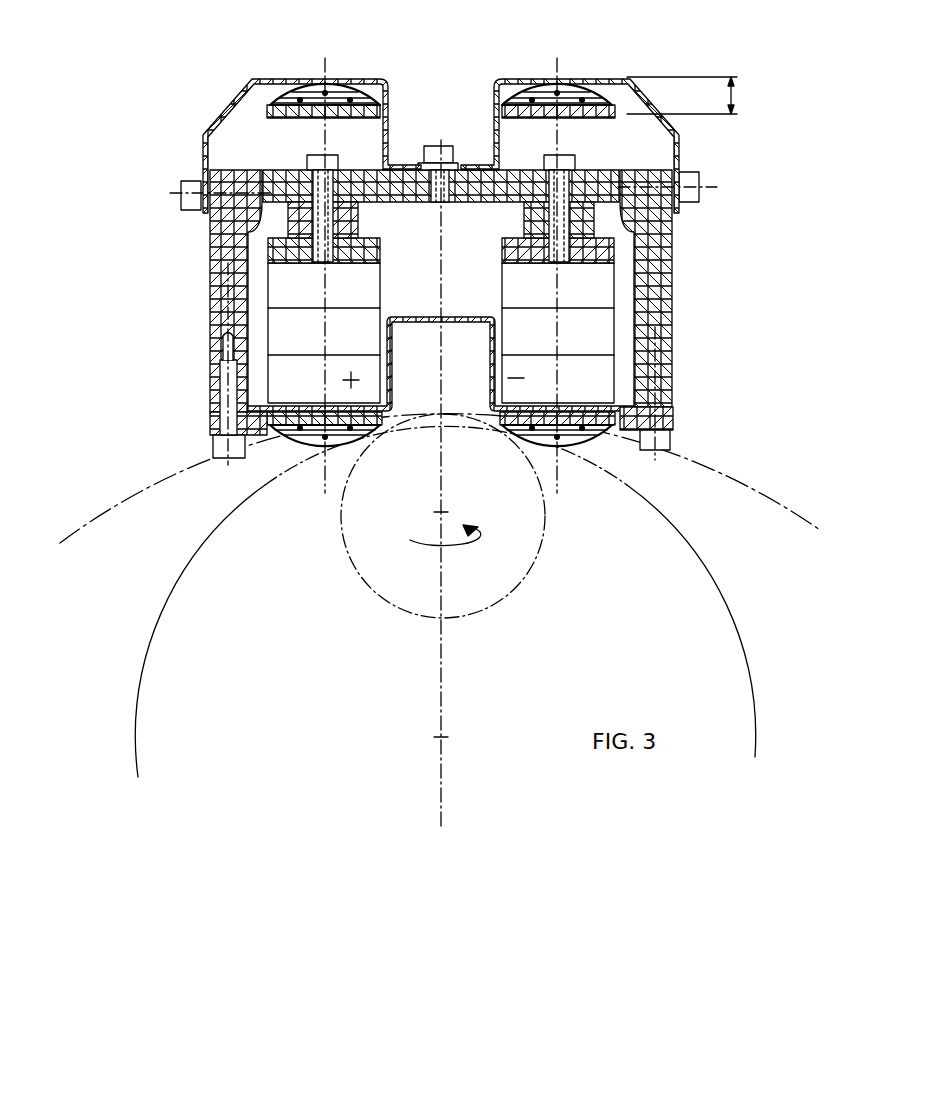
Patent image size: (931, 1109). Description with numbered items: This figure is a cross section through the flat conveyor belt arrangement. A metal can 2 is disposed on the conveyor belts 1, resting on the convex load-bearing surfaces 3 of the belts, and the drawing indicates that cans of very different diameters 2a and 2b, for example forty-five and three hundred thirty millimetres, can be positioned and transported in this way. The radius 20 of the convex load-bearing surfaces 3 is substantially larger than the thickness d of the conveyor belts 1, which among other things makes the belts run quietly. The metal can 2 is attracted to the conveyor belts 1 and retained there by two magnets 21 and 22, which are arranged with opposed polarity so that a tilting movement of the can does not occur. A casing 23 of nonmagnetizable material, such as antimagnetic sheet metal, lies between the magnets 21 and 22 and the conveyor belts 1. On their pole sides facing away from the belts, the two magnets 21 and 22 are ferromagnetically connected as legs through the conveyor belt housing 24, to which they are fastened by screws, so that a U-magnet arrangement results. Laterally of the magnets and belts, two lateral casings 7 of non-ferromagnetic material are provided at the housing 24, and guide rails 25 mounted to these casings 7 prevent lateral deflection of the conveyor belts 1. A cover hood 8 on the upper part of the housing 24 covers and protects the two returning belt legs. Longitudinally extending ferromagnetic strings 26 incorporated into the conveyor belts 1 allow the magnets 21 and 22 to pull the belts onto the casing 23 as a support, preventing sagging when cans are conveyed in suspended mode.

The conveyor belt 1 is at (277, 100).
The metal can 2 is at (140, 705).
The can diameter 2a is at (400, 610).
The can diameter 2b is at (147, 502).
The convex load-bearing surface 3 is at (370, 94).
The lateral casing 7 is at (231, 288).
The cover hood 8 is at (227, 107).
The radius 20 is at (327, 355).
The magnet 21 is at (366, 290).
The magnet 22 is at (515, 285).
The casing 23 is at (390, 373).
The conveyor belt housing 24 is at (477, 188).
The guide rail 25 is at (213, 430).
The ferromagnetic string 26 is at (327, 84).
The thickness d is at (690, 95).